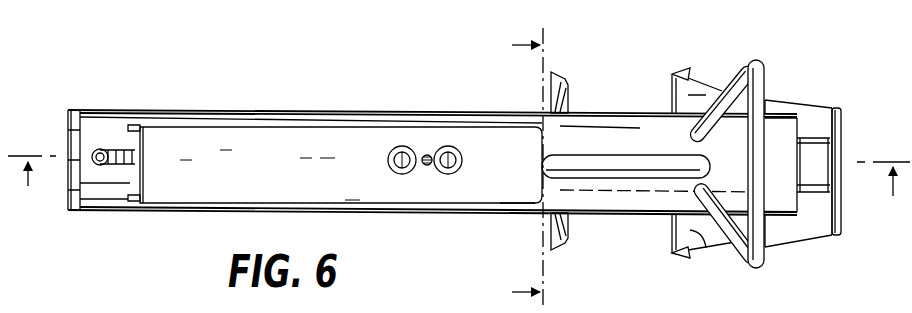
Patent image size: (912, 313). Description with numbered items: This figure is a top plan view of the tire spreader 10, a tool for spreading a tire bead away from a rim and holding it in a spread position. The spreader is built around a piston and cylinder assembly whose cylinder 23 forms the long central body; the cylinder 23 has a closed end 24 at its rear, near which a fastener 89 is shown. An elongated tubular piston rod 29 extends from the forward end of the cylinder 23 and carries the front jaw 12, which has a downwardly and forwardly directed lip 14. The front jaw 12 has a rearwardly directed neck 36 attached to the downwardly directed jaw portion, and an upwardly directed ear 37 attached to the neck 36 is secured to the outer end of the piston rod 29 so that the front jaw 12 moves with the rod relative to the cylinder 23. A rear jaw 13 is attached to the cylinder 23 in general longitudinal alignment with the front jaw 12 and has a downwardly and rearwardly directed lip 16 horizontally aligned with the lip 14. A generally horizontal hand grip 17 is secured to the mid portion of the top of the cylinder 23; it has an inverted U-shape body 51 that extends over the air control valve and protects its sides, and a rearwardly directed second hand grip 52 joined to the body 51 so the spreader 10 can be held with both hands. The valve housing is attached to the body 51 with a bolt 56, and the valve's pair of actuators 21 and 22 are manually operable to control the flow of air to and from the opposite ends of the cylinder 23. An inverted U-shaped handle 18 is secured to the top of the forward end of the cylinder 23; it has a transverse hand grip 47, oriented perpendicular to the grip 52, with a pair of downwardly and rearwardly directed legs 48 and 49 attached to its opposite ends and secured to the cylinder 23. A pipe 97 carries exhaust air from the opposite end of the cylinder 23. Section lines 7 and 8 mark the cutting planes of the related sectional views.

The tire spreader 10 is at (97, 74).
The closed end 24 is at (68, 134).
The hand grip 17 is at (280, 146).
The cylinder 23 is at (592, 128).
The second hand grip 52 is at (190, 148).
The screw 89 is at (118, 150).
The actuator 21 is at (402, 148).
The bolt 56 is at (427, 155).
The actuator 22 is at (450, 149).
The inverted U-shape body 51 is at (486, 190).
The pipe 97 is at (615, 170).
The lip 16 is at (555, 75).
The rear jaw 13 is at (566, 230).
The lip 14 is at (672, 73).
The front jaw 12 is at (684, 258).
The leg 48 is at (718, 100).
The leg 49 is at (728, 228).
The neck 36 is at (698, 237).
The handle 18 is at (758, 58).
The hand grip 47 is at (770, 102).
The piston rod 29 is at (808, 158).
The ear 37 is at (836, 142).
The section line 8- 8 is at (517, 169).
The section line 7- 7 is at (459, 184).